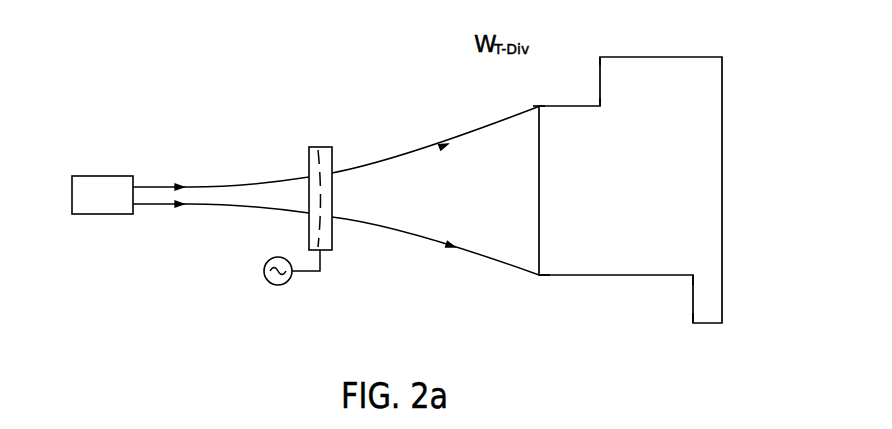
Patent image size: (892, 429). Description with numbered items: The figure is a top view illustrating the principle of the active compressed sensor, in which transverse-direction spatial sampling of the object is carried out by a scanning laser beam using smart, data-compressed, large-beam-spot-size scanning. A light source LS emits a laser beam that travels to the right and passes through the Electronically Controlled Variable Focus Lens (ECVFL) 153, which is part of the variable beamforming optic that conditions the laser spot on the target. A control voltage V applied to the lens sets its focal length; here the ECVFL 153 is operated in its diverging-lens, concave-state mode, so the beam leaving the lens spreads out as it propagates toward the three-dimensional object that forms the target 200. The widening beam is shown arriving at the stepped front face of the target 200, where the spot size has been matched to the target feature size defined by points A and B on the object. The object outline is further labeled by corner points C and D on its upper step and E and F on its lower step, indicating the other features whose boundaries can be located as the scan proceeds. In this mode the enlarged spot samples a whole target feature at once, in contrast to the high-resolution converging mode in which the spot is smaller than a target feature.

The Electronically Controlled Variable Focus Lens (ECVFL) 153 is at (309, 161).
The target 200 is at (728, 168).
The light source LS is at (102, 195).
The voltage generator V is at (292, 278).
The object point A is at (533, 279).
The object point B is at (533, 88).
The object point C is at (591, 98).
The object point D is at (591, 64).
The object point E is at (685, 287).
The object point F is at (685, 321).